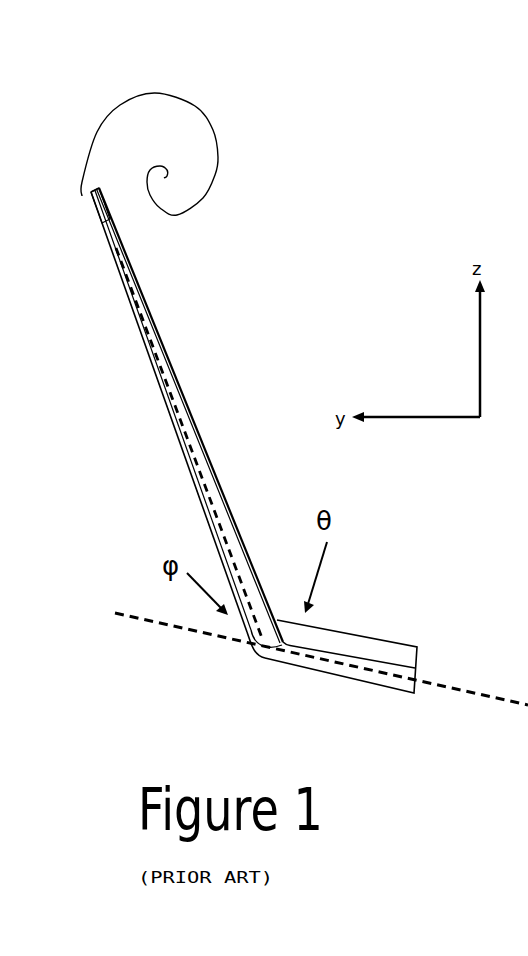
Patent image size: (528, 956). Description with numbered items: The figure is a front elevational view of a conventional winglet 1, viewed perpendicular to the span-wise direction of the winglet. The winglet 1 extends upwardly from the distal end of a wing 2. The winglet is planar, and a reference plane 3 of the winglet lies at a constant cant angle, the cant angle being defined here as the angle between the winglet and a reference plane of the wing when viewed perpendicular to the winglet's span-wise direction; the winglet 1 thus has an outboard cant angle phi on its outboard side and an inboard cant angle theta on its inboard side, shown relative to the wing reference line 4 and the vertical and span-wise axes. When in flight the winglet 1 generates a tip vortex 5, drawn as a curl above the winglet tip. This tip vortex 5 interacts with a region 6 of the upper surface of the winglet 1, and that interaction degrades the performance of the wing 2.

The winglet 1 is at (192, 423).
The wing 2 is at (355, 660).
The reference plane of the winglet 3 is at (158, 370).
The ice surface line 4 is at (463, 690).
The tip vortex 5 is at (220, 167).
The region of the upper surface of the winglet 6 is at (122, 223).